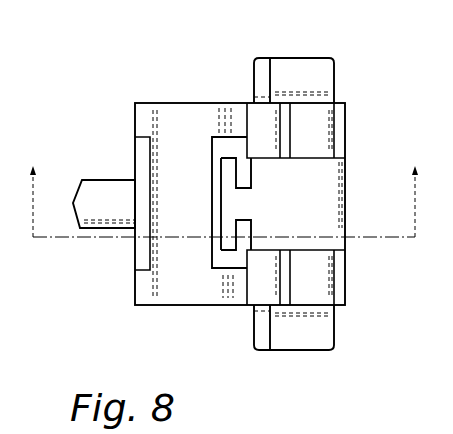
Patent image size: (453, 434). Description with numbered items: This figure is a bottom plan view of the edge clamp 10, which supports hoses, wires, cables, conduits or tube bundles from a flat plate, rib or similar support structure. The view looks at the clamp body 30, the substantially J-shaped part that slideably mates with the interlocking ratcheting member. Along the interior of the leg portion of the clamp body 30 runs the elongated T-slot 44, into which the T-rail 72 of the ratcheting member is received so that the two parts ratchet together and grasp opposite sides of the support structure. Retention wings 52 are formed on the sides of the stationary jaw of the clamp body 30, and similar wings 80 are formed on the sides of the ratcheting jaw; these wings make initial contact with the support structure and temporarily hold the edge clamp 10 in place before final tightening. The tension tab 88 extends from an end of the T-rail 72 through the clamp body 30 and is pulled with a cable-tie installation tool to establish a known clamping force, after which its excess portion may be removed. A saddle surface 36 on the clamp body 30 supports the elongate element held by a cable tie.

The edge clamp 10 is at (224, 191).
The clamp body 30 is at (452, 415).
The saddle surface 36 is at (172, 270).
The T-slot 44 is at (232, 170).
The retention wings 52 is at (262, 73).
The T-rail 72 is at (211, 200).
The wings 80 is at (314, 72).
The tension tab 88 is at (98, 180).